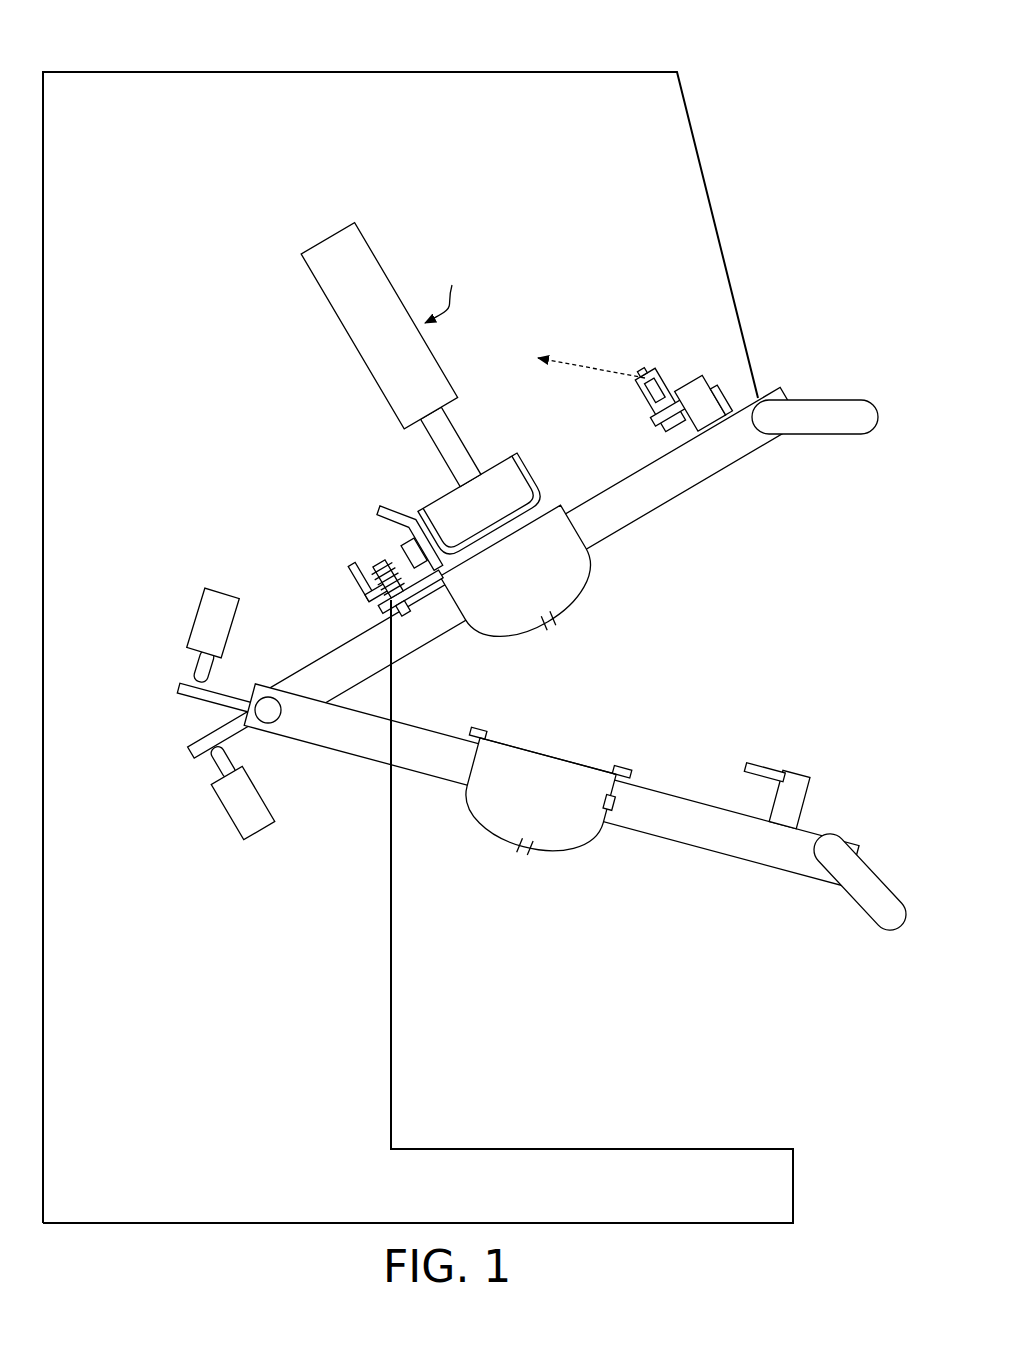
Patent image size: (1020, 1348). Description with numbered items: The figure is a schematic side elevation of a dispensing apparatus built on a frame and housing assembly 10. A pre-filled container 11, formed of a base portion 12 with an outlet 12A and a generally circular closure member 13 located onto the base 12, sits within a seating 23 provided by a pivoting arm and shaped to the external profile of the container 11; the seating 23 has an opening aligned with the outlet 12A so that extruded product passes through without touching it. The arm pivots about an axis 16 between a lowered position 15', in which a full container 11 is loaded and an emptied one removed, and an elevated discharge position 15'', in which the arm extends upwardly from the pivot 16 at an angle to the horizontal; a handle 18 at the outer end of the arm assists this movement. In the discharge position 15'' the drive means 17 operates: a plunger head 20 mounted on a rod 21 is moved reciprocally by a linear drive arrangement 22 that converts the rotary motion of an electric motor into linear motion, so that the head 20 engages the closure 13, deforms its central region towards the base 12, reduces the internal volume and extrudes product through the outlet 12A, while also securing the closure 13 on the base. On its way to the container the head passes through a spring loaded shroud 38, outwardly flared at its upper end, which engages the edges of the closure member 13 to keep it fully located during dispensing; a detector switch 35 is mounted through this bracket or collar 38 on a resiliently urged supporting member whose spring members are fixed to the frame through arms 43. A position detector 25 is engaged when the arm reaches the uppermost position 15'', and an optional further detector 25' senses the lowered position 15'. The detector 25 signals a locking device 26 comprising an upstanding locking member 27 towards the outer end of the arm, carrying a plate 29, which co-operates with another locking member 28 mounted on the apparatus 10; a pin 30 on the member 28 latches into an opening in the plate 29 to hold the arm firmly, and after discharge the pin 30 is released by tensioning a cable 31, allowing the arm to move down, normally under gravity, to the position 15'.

The frame and housing assembly 10 is at (145, 63).
The container 11 is at (572, 714).
The base portion 12 is at (580, 600).
The outlet 12A is at (548, 625).
The closure member 13 is at (577, 755).
The lowered position 15' is at (516, 809).
The discharge position 15'' is at (493, 580).
The axis 16 is at (271, 704).
The drive means 17 is at (447, 293).
The handle 18 is at (845, 435).
The plunger head 20 is at (497, 478).
The rod 21 is at (437, 457).
The linear drive arrangement 22 is at (332, 246).
The seating 23 is at (610, 803).
The position detector 25 is at (220, 791).
The further detector 25' is at (187, 627).
The locking device 26 is at (672, 364).
The locking member 27 is at (718, 390).
The locking member 28 is at (635, 355).
The plate 29 is at (760, 770).
The pin 30 is at (660, 420).
The cable 31 is at (548, 355).
The detector switch 35 is at (394, 541).
The spring loaded shroud 38 is at (380, 508).
The arms 43 is at (352, 570).